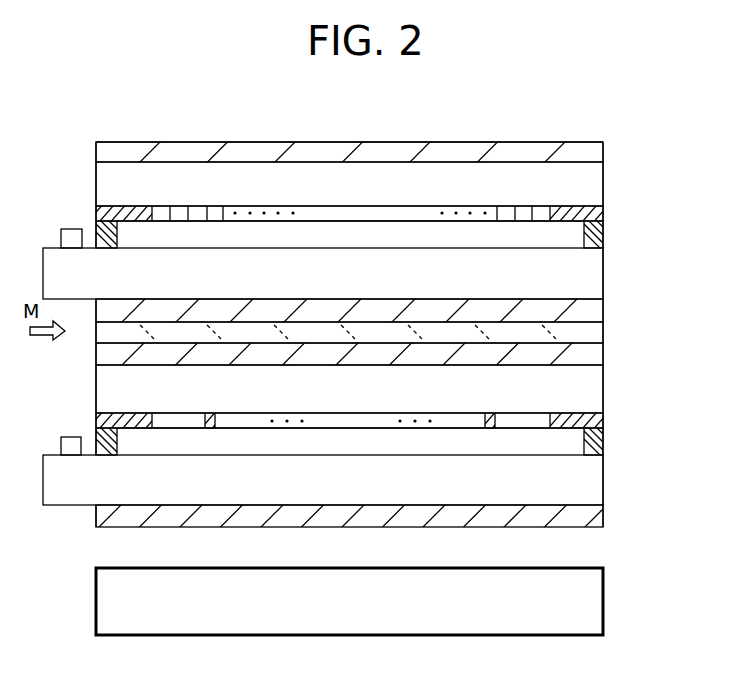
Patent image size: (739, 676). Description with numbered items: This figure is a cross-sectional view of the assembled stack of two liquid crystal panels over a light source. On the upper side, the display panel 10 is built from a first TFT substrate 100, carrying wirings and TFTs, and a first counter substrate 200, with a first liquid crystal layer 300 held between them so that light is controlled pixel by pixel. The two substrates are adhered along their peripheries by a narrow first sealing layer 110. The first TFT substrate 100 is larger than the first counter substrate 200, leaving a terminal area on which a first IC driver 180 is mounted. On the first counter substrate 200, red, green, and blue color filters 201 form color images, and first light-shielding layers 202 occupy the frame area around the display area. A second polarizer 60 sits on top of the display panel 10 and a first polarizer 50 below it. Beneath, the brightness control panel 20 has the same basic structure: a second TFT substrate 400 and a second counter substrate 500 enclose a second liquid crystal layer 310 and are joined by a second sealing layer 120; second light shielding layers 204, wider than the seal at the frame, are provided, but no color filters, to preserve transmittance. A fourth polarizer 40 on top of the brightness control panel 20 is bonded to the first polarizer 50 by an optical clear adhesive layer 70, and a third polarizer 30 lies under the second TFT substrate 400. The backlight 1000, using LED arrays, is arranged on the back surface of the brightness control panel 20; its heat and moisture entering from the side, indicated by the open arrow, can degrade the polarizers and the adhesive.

The second polarizer 60 is at (596, 157).
The first counter substrate 200 is at (593, 185).
The first light-shielding layer 202 is at (377, 195).
The color filter 201 is at (158, 205).
The first sealing layer 110 is at (600, 237).
The first liquid crystal layer 300 is at (399, 237).
The first TFT substrate 100 is at (356, 273).
The display panel 10 is at (377, 227).
The first IC driver 180 is at (67, 228).
The first polarizer 50 is at (597, 312).
The adhesive layer 70 is at (594, 333).
The fourth polarizer 40 is at (595, 353).
The second counter substrate 500 is at (590, 395).
The second light shielding layer 204 is at (135, 412).
The second sealing layer 120 is at (593, 446).
The second liquid crystal layer 310 is at (405, 445).
The second TFT substrate 400 is at (356, 480).
The brightness control panel 20 is at (377, 435).
The third polarizer 30 is at (597, 515).
The backlight 1000 is at (580, 610).